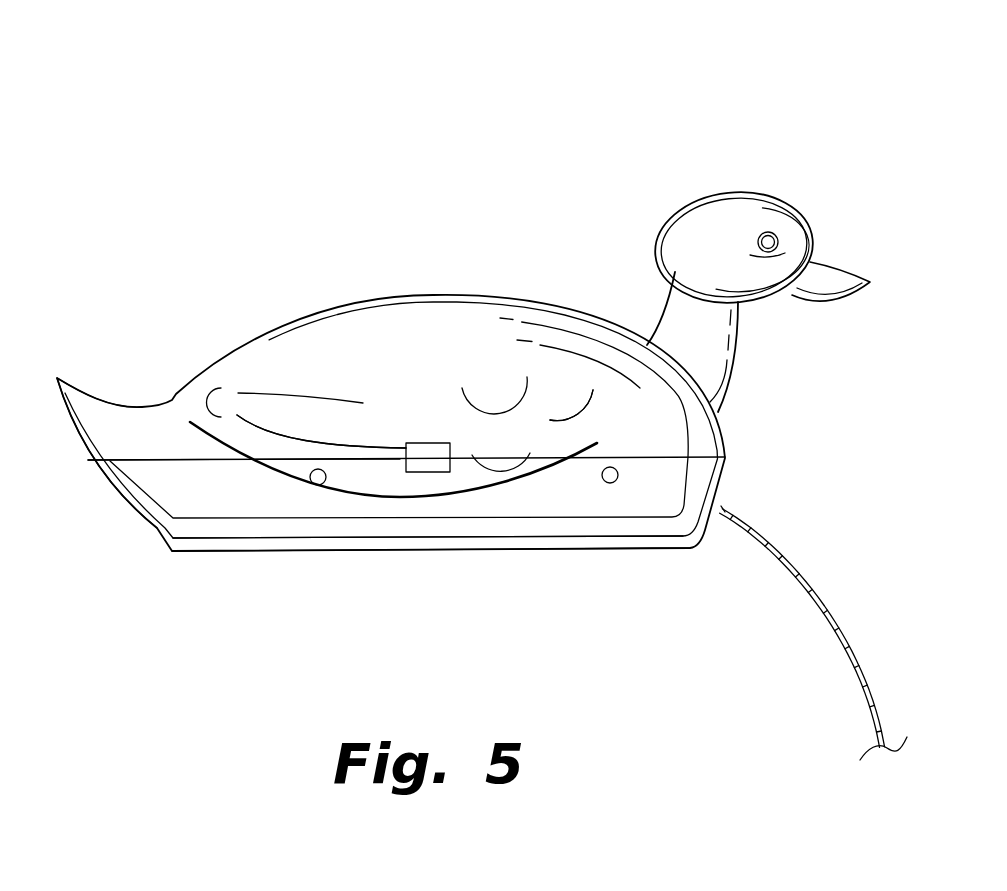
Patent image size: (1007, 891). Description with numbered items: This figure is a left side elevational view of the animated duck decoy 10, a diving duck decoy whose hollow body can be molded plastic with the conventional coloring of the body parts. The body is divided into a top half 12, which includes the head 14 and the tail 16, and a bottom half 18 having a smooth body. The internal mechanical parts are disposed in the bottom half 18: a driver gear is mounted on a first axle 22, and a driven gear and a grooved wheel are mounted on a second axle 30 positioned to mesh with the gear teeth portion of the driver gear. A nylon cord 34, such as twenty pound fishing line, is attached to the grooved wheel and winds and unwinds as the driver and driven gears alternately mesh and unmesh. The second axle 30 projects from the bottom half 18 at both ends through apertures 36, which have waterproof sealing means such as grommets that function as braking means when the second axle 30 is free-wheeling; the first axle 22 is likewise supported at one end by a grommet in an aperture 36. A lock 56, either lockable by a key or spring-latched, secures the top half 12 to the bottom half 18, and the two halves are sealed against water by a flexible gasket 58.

The animated duck decoy 10 is at (485, 106).
The top half 12 is at (433, 352).
The head 14 is at (713, 193).
The tail 16 is at (58, 378).
The bottom half 18 is at (208, 507).
The first axle 22 is at (332, 470).
The second axle 30 is at (624, 459).
The nylon cord 34 is at (834, 612).
The apertures 36 is at (311, 481).
The lock 56 is at (433, 452).
The flexible gasket 58 is at (130, 463).